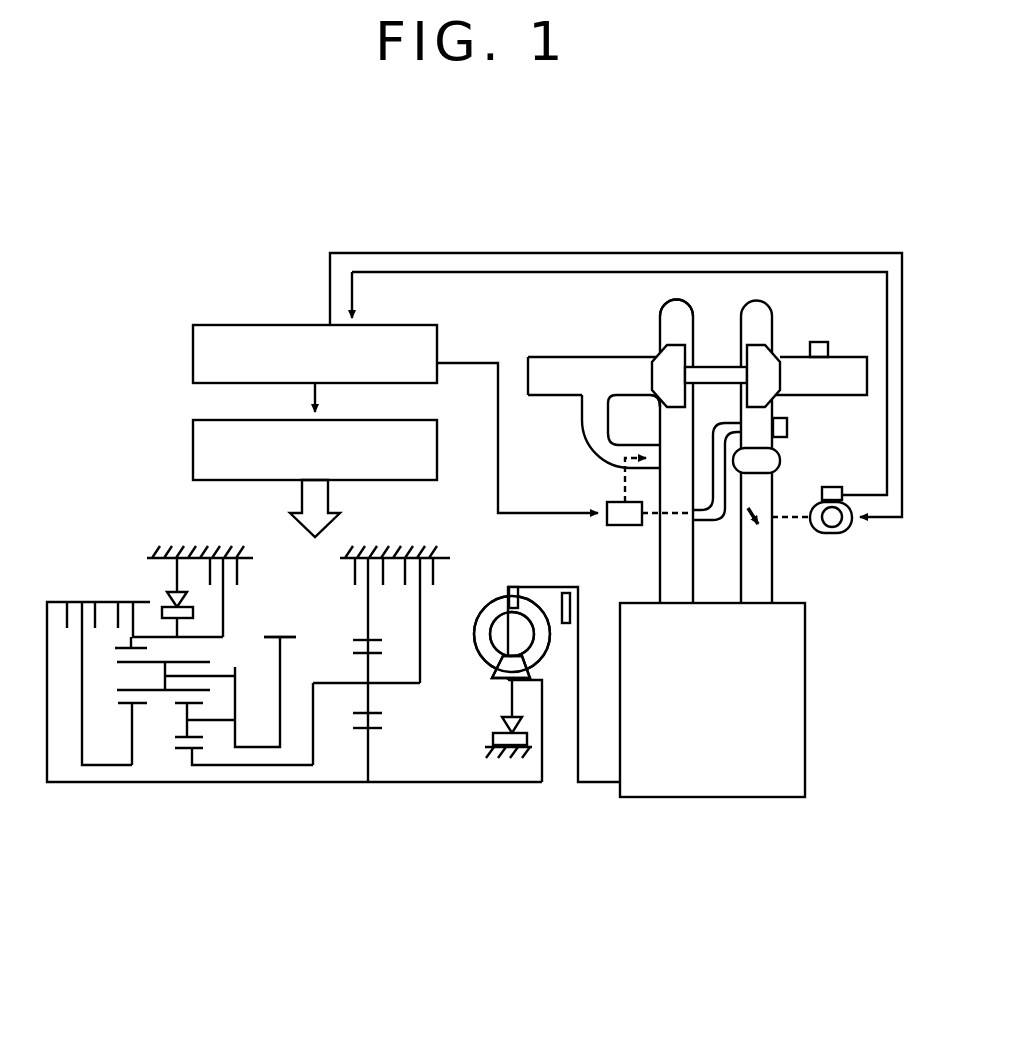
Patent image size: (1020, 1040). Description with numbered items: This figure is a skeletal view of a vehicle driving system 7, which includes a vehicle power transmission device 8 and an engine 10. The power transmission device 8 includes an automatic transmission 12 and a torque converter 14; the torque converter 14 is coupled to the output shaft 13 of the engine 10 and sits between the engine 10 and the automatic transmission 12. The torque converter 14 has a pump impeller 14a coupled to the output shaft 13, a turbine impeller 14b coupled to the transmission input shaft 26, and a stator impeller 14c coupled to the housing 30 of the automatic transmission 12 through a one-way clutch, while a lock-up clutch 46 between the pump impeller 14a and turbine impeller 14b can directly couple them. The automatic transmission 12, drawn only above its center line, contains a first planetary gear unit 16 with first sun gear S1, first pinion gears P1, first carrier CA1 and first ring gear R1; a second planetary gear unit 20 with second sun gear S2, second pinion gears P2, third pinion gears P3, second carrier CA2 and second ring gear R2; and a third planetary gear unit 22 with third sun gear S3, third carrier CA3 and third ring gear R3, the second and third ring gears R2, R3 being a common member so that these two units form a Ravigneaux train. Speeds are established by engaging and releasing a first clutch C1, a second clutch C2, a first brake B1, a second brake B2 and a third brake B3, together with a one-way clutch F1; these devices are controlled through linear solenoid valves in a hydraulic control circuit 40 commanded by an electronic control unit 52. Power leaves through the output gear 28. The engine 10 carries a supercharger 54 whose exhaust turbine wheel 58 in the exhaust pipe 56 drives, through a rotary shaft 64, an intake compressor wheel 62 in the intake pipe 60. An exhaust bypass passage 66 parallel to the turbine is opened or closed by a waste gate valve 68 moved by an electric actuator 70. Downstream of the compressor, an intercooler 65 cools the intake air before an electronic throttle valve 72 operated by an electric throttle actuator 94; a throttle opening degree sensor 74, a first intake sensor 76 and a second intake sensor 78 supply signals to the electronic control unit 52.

The vehicle driving system 7 is at (84, 398).
The vehicle power transmission device 8 is at (89, 463).
The engine 10 is at (604, 322).
The automatic transmission 12 is at (169, 500).
The output shaft 13 is at (593, 783).
The torque converter 14 is at (533, 568).
The pump impeller 14a is at (480, 627).
The turbine impeller 14b is at (542, 637).
The stator impeller 14c is at (505, 681).
The first planetary gear unit 16 is at (370, 798).
The second planetary gear unit 20 is at (193, 798).
The third planetary gear unit 22 is at (135, 798).
The transmission input shaft 26 is at (523, 785).
The output gear 28 is at (291, 637).
The housing (transmission case) 30 is at (205, 543).
The hydraulic control circuit 40 is at (412, 425).
The lock-up clutch 46 is at (589, 607).
The electronic control unit 52 is at (446, 310).
The supercharger 54 is at (727, 360).
The exhaust pipe 56 is at (598, 369).
The exhaust turbine wheel 58 is at (665, 364).
The intake pipe 60 is at (848, 363).
The intake compressor wheel 62 is at (770, 363).
The rotary shaft 64 is at (675, 304).
The intercooler 65 is at (783, 460).
The exhaust bypass passage 66 is at (590, 437).
The waste gate valve 68 is at (650, 459).
The electric actuator 70 is at (635, 526).
The electronic throttle valve 72 is at (760, 526).
The throttle opening degree sensor 74 is at (838, 490).
The first intake sensor 76 is at (826, 341).
The second intake sensor (supercharging pressure sensor) 78 is at (789, 427).
The electric throttle actuator 94 is at (850, 531).
The first ring gear R1 is at (362, 637).
The second ring gear R2 is at (94, 593).
The third ring gear R3 is at (128, 640).
The first pinion gears P1 is at (394, 660).
The second pinion gears P2 is at (186, 706).
The third pinion gears P3 is at (150, 663).
The first sun gear S1 is at (376, 731).
The second sun gear S2 is at (185, 751).
The third sun gear S3 is at (126, 706).
The first carrier CA1 is at (395, 686).
The second carrier CA2 is at (281, 750).
The third carrier CA3 is at (240, 668).
The first clutch C1 is at (70, 598).
The second clutch C2 is at (161, 602).
The first brake B1 is at (439, 620).
The second brake B2 is at (243, 597).
The third brake B3 is at (350, 575).
The one-way clutch F1 is at (172, 601).